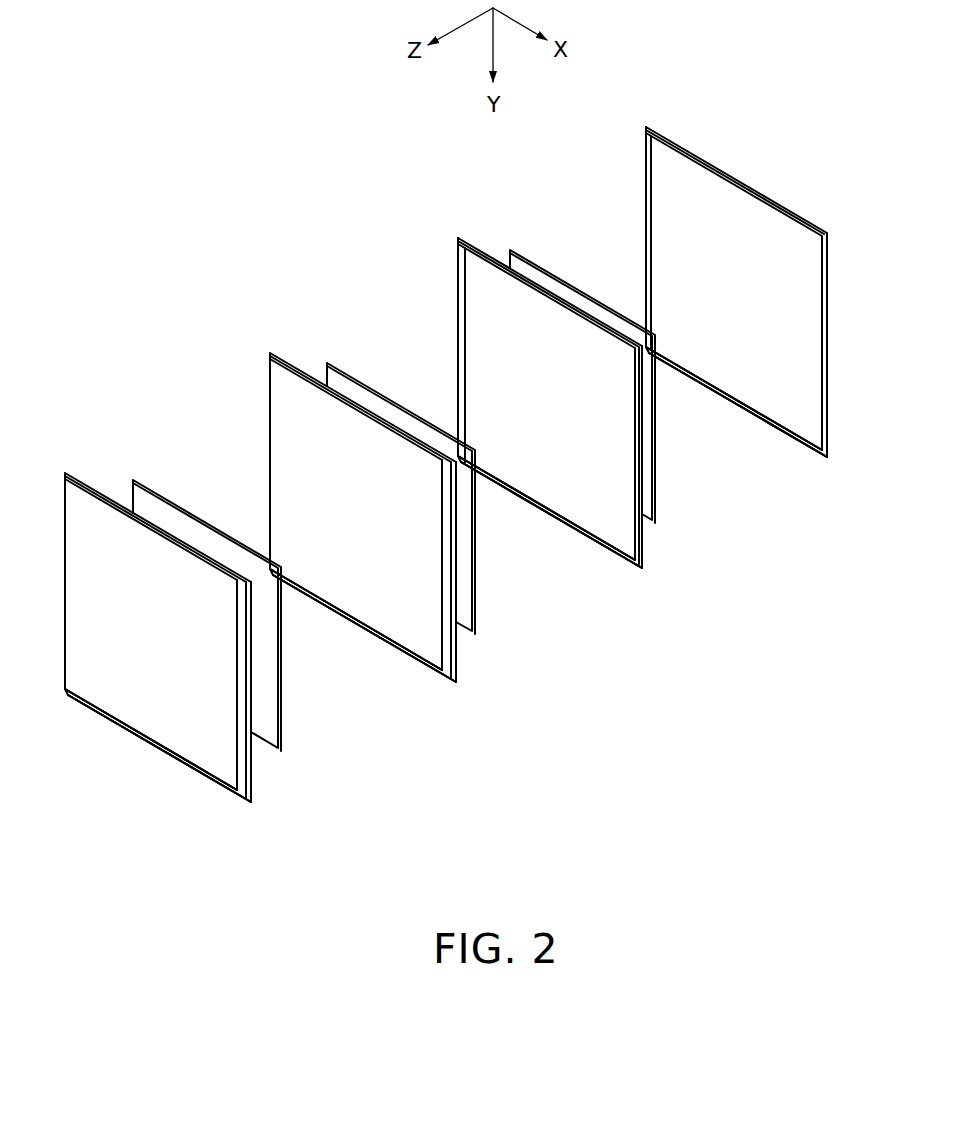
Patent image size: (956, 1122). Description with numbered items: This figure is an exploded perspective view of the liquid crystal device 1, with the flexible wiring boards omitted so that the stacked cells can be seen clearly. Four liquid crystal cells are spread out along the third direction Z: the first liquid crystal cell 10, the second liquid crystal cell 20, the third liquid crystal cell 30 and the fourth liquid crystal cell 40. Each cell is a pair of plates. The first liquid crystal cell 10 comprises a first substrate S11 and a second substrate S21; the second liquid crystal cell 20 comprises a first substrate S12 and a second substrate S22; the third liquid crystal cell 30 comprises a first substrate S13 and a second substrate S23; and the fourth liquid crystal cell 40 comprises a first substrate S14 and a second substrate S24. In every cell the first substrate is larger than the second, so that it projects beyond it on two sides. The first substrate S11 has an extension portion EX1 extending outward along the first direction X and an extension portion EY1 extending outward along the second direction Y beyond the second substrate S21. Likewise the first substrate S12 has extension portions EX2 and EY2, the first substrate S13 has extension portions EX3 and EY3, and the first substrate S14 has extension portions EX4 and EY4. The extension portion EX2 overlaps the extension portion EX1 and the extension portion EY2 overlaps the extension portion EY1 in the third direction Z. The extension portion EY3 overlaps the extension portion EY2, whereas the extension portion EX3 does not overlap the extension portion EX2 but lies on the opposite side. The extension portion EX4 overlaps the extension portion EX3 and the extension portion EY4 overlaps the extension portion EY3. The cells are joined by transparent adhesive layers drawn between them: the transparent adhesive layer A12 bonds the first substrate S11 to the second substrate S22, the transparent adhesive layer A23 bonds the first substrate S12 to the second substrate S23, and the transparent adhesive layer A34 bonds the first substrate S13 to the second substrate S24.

The liquid crystal device 1 is at (433, 470).
The first liquid crystal cell 10 is at (70, 470).
The second liquid crystal cell 20 is at (275, 350).
The third liquid crystal cell 30 is at (459, 237).
The fourth liquid crystal cell 40 is at (647, 126).
The transparent adhesive layer A12 is at (133, 508).
The transparent adhesive layer A23 is at (327, 362).
The transparent adhesive layer A34 is at (510, 249).
The extension portion EX1 is at (256, 767).
The extension portion EX2 is at (460, 656).
The extension portion EX3 is at (456, 274).
The extension portion EX4 is at (645, 210).
The extension portion EY1 is at (154, 748).
The extension portion EY2 is at (354, 623).
The extension portion EY3 is at (548, 514).
The extension portion EY4 is at (697, 379).
The first substrate S11 is at (207, 778).
The second substrate S21 is at (230, 782).
The first substrate S12 is at (408, 656).
The second substrate S22 is at (431, 660).
The first substrate S13 is at (603, 548).
The second substrate S23 is at (625, 548).
The first substrate S14 is at (748, 408).
The second substrate S24 is at (771, 420).